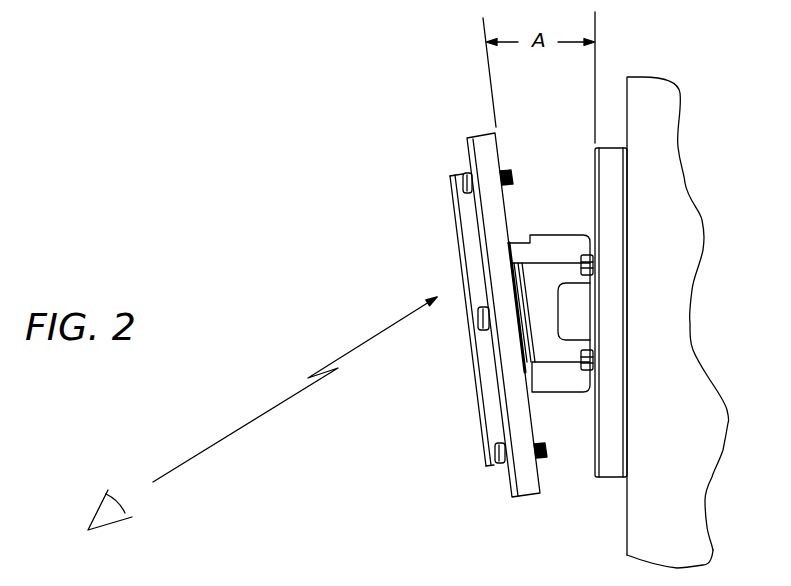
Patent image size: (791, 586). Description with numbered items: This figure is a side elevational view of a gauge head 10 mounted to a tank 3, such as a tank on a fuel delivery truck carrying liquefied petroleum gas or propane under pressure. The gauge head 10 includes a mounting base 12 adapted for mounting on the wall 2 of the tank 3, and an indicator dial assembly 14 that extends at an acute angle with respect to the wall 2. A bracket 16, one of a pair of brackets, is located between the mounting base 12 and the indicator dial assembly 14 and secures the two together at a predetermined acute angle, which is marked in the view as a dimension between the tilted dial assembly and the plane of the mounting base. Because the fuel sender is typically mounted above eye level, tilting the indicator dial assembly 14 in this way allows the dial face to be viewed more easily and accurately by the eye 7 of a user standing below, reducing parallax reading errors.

The gauge head 10 is at (398, 142).
The indicator dial assembly 14 is at (447, 242).
The bracket 16 is at (545, 345).
The mounting base 12 is at (615, 225).
The tank 3 is at (668, 110).
The wall 2 is at (627, 530).
The eye 7 is at (85, 500).